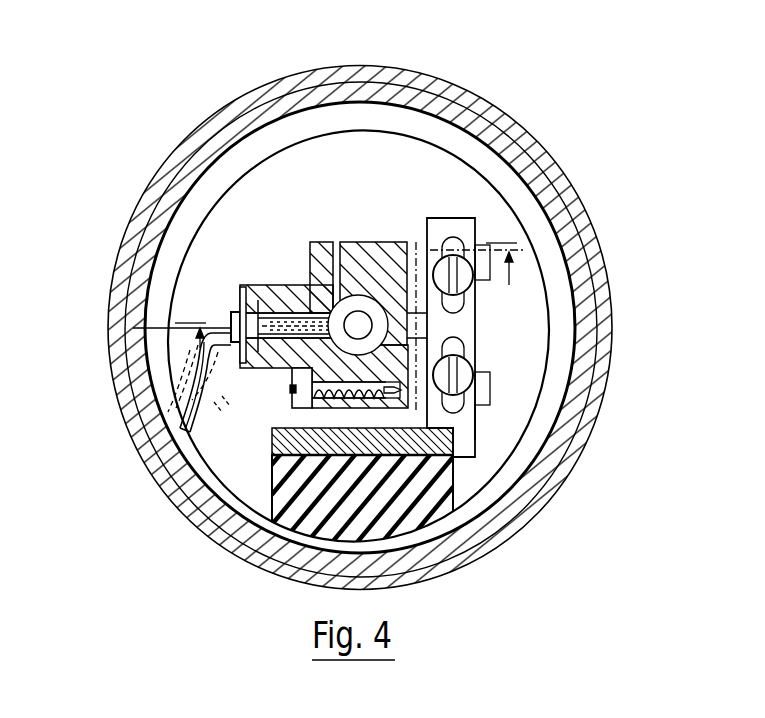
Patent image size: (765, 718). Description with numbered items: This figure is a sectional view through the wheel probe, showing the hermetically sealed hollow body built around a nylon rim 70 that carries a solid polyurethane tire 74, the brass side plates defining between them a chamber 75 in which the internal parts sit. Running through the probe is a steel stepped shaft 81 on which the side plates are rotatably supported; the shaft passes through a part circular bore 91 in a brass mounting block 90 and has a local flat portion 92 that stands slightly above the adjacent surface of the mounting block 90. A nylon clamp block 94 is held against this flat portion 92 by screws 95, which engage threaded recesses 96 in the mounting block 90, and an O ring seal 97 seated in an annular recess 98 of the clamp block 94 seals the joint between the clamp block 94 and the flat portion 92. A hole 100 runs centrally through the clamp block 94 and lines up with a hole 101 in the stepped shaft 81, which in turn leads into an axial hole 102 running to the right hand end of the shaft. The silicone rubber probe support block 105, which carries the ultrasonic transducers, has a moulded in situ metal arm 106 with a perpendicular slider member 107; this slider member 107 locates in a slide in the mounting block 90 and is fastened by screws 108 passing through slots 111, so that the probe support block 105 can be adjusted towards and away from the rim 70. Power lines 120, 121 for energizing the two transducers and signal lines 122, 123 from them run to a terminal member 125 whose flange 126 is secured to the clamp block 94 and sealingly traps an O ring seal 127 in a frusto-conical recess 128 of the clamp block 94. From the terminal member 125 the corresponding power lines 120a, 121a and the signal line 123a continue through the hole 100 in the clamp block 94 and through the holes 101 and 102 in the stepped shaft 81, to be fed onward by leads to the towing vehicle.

The rim 70 is at (482, 125).
The tire 74 is at (476, 105).
The chamber 75 is at (396, 165).
The stepped shaft 81 is at (272, 440).
The mounting block 90 is at (362, 242).
The part circular bore 91 is at (360, 243).
The flat portion 92 is at (312, 392).
The clamp block 94 is at (299, 285).
The screws 95 is at (300, 406).
The threaded recesses 96 is at (440, 480).
The O ring seal 97 is at (334, 300).
The annular recess 98 is at (316, 243).
The hole 100 is at (281, 286).
The hole 101 is at (298, 391).
The axial hole 102 is at (372, 330).
The probe support block 105 is at (470, 450).
The metal arm 106 is at (478, 410).
The slider member 107 is at (498, 380).
The screws 108 is at (490, 268).
The slots 111 is at (455, 240).
The power line 120 is at (232, 344).
The power line 120a is at (134, 328).
The power line 121 is at (232, 352).
The power line 121a is at (290, 312).
The signal line 122 is at (215, 402).
The signal line 123 is at (262, 406).
The signal line 123a is at (426, 228).
The terminal member 125 is at (233, 314).
The flange 126 is at (242, 290).
The O ring seal 127 is at (258, 302).
The frusto-conical recess 128 is at (225, 392).